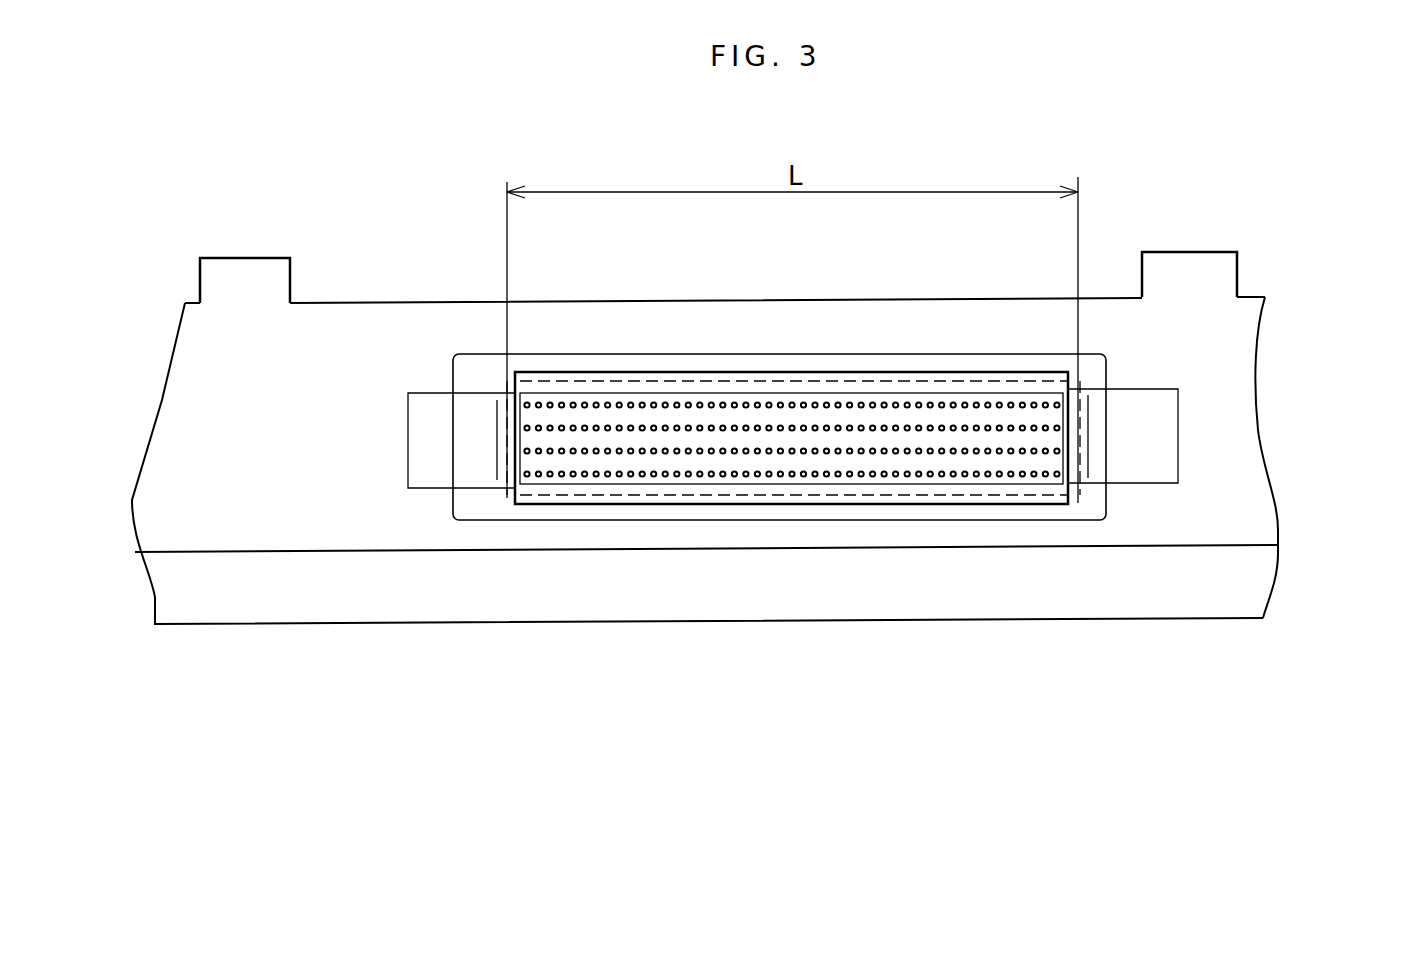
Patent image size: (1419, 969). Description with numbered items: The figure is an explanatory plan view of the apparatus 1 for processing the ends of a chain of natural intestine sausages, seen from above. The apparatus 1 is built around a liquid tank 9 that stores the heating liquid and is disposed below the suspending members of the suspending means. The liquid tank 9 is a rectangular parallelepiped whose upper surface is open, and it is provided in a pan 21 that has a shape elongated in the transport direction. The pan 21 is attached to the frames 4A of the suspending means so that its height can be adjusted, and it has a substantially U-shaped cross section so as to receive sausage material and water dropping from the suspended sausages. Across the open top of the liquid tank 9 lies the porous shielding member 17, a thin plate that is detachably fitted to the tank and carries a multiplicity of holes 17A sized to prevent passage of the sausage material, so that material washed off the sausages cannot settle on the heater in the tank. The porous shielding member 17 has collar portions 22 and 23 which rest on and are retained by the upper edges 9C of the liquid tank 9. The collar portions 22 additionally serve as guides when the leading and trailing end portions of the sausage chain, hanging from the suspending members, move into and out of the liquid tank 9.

The apparatus for processing ends of a chain of natural intestine sausages 1 is at (773, 728).
The frames 4A is at (253, 283).
The liquid tank 9 is at (1083, 508).
The upper edges 9C is at (507, 428).
The porous shielding member 17 is at (730, 415).
The holes 17A is at (850, 405).
The pan 21 is at (237, 483).
The collar portions 22 is at (432, 463).
The collar portions 23 is at (1000, 372).